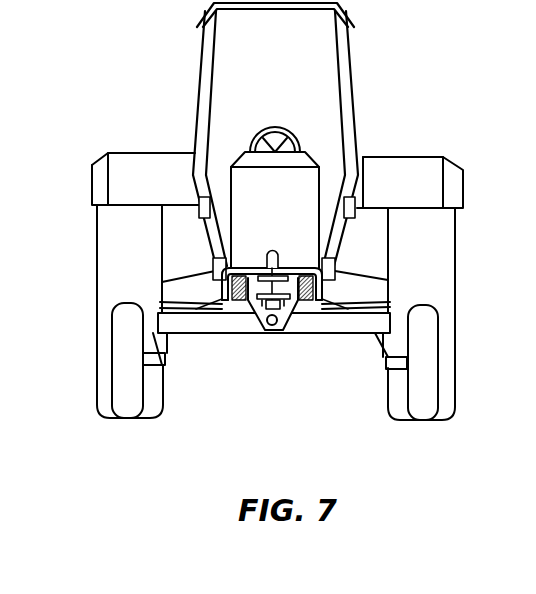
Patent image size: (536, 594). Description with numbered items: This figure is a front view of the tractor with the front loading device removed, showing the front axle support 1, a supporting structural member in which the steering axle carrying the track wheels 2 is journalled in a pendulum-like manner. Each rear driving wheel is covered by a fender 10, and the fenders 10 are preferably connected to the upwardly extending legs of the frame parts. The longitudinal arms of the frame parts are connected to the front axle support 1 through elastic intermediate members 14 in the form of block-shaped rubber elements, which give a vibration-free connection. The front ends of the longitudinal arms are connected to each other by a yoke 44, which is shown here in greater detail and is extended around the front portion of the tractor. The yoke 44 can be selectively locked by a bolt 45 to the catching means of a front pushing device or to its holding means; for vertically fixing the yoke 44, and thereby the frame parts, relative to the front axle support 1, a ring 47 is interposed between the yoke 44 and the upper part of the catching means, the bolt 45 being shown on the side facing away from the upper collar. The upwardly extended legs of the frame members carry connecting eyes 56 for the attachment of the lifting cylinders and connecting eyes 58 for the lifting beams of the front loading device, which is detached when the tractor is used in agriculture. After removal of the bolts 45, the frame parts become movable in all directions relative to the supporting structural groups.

The fender 10 is at (98, 187).
The track wheels 2 is at (423, 405).
The connecting eyes 58 is at (199, 205).
The connecting eyes 56 is at (214, 268).
The yoke 44 is at (233, 300).
The elastic intermediate members 14 is at (308, 300).
The front axle support 1 is at (282, 325).
The bolt 45 is at (265, 272).
The ring 47 is at (288, 272).